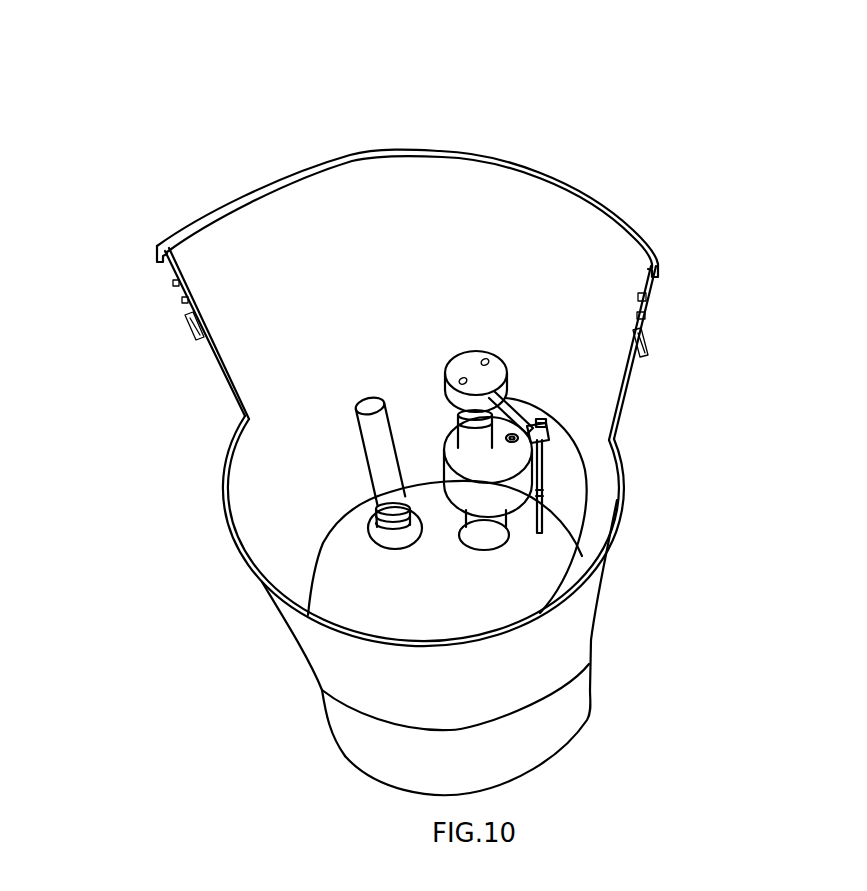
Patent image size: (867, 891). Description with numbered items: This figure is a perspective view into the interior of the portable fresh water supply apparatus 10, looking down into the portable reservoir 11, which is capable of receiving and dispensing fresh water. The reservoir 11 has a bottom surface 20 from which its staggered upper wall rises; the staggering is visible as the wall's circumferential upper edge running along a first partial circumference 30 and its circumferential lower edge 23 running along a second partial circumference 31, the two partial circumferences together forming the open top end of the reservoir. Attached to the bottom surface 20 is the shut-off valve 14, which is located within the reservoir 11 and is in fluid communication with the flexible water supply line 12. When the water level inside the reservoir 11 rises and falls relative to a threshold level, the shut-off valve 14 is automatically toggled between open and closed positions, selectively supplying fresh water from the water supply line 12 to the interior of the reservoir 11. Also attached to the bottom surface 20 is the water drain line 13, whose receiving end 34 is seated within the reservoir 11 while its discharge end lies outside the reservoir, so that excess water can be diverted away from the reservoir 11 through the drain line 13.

The portable fresh water supply apparatus 10 is at (666, 389).
The portable reservoir 11 is at (533, 667).
The flexible water supply line 12 is at (590, 510).
The water drain line 13 is at (372, 438).
The shut-off valve 14 is at (490, 422).
The bottom surface 20 is at (367, 577).
The circumferential lower edge 23 is at (367, 638).
The first partial circumference 30 is at (638, 180).
The second partial circumference 31 is at (636, 615).
The receiving end 34 is at (367, 407).